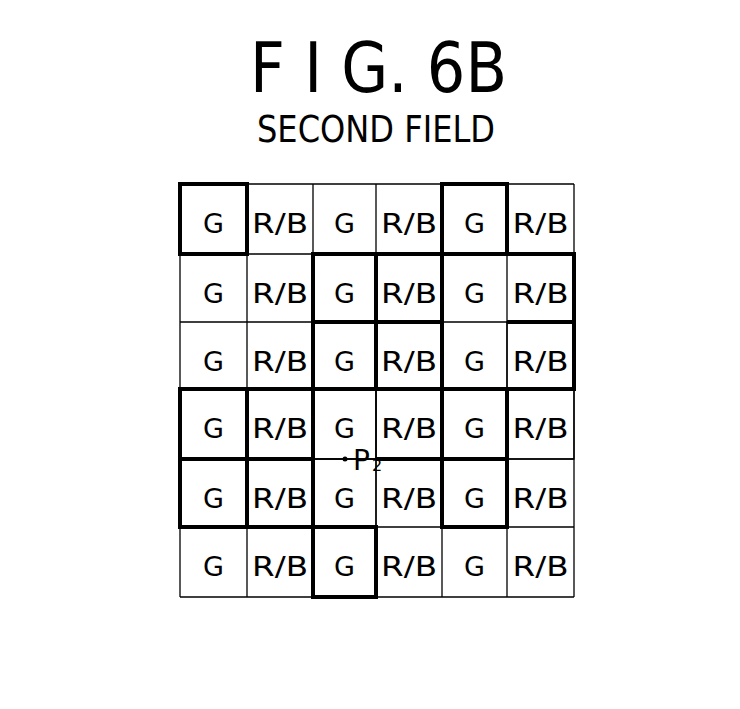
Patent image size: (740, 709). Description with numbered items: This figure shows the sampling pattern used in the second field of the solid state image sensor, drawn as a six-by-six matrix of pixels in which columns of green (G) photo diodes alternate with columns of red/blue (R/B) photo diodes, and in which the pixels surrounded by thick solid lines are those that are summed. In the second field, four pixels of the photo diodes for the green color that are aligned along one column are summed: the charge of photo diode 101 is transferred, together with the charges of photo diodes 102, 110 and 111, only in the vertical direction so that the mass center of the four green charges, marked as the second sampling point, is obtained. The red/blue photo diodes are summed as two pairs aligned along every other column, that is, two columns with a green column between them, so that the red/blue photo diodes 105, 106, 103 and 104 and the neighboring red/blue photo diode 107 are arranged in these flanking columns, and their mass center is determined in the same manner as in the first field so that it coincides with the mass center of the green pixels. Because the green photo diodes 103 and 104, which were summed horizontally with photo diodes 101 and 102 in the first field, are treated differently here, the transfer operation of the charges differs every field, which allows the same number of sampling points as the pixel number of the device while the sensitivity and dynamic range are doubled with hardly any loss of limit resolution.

The photo diode 101 is at (330, 375).
The photo diode 102 is at (329, 450).
The photo diode 103 is at (493, 380).
The photo diode 104 is at (495, 448).
The photo diode 105 is at (428, 267).
The photo diode 106 is at (430, 335).
The photo diode 107 is at (428, 447).
The photo diode 110 is at (333, 515).
The photo diode 111 is at (360, 583).